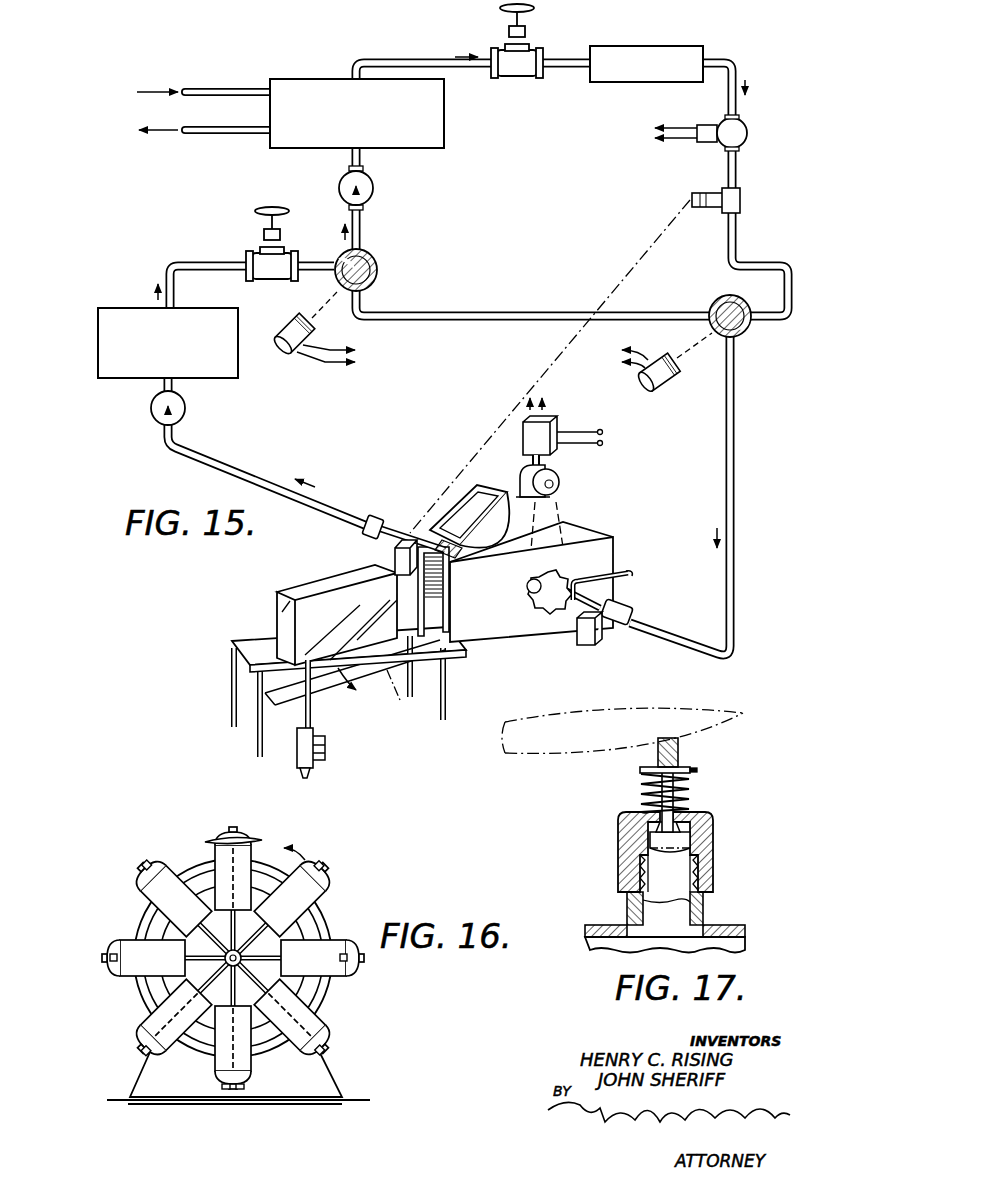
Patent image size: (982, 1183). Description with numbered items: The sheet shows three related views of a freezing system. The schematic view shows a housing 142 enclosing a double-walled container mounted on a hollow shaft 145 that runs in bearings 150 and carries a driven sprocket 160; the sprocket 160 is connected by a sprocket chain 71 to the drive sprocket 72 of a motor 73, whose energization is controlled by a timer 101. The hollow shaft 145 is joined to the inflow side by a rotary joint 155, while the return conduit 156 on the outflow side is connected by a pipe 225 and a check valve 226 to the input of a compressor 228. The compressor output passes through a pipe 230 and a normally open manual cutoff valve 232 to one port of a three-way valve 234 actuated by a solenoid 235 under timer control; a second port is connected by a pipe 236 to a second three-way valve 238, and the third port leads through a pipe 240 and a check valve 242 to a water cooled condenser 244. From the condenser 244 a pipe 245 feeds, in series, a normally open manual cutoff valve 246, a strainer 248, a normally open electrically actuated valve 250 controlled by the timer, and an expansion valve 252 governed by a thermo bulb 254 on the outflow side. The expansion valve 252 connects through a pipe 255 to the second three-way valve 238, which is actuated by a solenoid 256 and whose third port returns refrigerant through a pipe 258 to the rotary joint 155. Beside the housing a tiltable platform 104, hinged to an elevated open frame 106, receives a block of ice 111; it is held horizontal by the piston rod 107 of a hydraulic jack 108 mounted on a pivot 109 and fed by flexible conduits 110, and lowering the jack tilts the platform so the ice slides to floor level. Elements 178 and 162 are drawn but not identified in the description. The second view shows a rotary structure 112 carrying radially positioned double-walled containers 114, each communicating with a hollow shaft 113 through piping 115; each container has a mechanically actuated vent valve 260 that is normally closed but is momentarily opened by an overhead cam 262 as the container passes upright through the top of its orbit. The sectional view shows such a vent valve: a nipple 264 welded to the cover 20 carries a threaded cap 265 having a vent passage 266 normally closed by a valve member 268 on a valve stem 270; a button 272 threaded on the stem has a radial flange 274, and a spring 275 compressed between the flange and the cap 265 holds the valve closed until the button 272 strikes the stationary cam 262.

In FIG. 15, the pipe 245 is at (413, 60).
In FIG. 15, the normally open manual cutoff valve 246 is at (528, 50).
In FIG. 15, the strainer 248 is at (667, 48).
In FIG. 15, the normally open electrically actuated valve 250 is at (748, 127).
In FIG. 15, the expansion valve 252 is at (748, 200).
In FIG. 15, the pipe 255 is at (784, 266).
In FIG. 15, the water cooled condenser 244 is at (444, 125).
In FIG. 15, the check valve 242 is at (374, 183).
In FIG. 15, the pipe 240 is at (362, 226).
In FIG. 15, the normally open manual cutoff valve 232 is at (258, 252).
In FIG. 15, the pipe 230 is at (190, 263).
In FIG. 15, the 3-way valve 234 is at (382, 262).
In FIG. 15, the compressor 228 is at (110, 310).
In FIG. 15, the solenoid 235 is at (285, 325).
In FIG. 15, the pipe 236 is at (529, 311).
In FIG. 15, the second 3-way valve 238 is at (712, 301).
In FIG. 15, the solenoid 256 is at (680, 378).
In FIG. 15, the check valve 226 is at (186, 412).
In FIG. 15, the pipe 225 is at (256, 476).
In FIG. 15, the pipe 258 is at (733, 492).
In FIG. 15, the timer 101 is at (523, 441).
In FIG. 15, the motor 73 is at (546, 460).
In FIG. 15, the drive sprocket 72 is at (558, 480).
In FIG. 15, the sprocket chain 71 is at (566, 505).
In FIG. 15, the chute 178 is at (470, 492).
In FIG. 15, the bearings 150 is at (400, 535).
In FIG. 15, the return conduit 156 is at (377, 518).
In FIG. 15, the thermo bulb 254 is at (394, 545).
In FIG. 15, the block of ice 111 is at (306, 583).
In FIG. 15, the tiltable platform 104 is at (249, 640).
In FIG. 15, the elevated open frame 106 is at (250, 667).
In FIG. 15, the piston rod 107 is at (311, 713).
In FIG. 15, the flexible conduits 110 is at (327, 748).
In FIG. 15, the hydraulic jack 108 is at (297, 755).
In FIG. 15, the pivot 109 is at (308, 778).
In FIG. 15, the housing 142 is at (476, 620).
In FIG. 15, the hollow shaft 145 is at (573, 620).
In FIG. 15, the driven sprocket 160 is at (540, 607).
In FIG. 15, the arm 162 is at (627, 575).
In FIG. 15, the rotary joint 155 is at (635, 615).
In FIG. 16, the overhead cam 262 is at (244, 840).
In FIG. 17, the overhead cam 262 is at (648, 712).
In FIG. 16, the mechanically actuated vent valve 260 is at (158, 863).
In FIG. 17, the mechanically actuated vent valve 260 is at (616, 842).
In FIG. 16, the double-walled containers 114 is at (148, 895).
In FIG. 16, the rotary structure 112 is at (327, 912).
In FIG. 16, the hollow shaft 113 is at (226, 957).
In FIG. 16, the piping 115 is at (268, 958).
In FIG. 17, the button 272 is at (680, 755).
In FIG. 17, the radial flange 274 is at (697, 770).
In FIG. 17, the valve stem 270 is at (650, 787).
In FIG. 17, the spring 275 is at (648, 806).
In FIG. 17, the vent passage 266 is at (700, 817).
In FIG. 17, the cap 265 is at (702, 828).
In FIG. 17, the valve member 268 is at (694, 845).
In FIG. 17, the closure or cover 20 is at (600, 925).
In FIG. 17, the nipple 264 is at (705, 912).